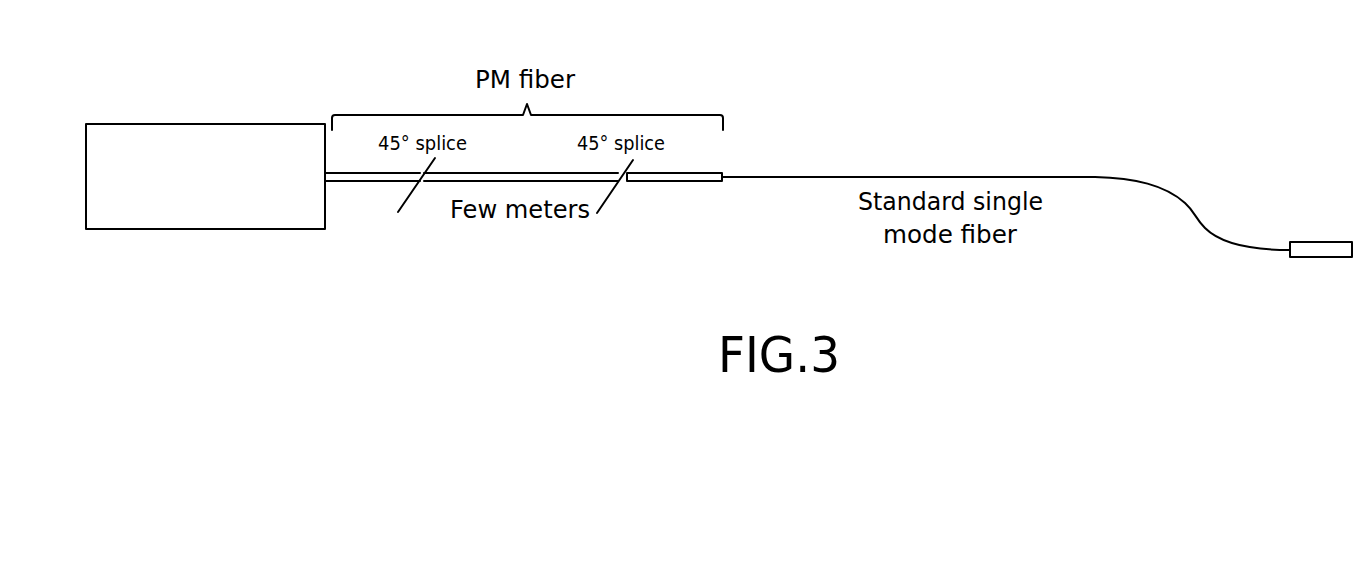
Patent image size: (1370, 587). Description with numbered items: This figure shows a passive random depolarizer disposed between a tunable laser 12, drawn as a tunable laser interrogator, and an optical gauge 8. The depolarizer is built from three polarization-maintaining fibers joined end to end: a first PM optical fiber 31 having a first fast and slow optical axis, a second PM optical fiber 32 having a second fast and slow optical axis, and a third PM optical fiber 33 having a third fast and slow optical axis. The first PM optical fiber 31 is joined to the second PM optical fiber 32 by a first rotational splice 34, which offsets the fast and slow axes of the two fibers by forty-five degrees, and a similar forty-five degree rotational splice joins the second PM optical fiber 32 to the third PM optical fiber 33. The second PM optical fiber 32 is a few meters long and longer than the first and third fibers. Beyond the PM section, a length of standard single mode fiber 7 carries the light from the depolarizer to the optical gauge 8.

The tunable laser 12 is at (206, 124).
The first PM optical fiber 31 is at (362, 176).
The second PM optical fiber 32 is at (447, 176).
The third PM optical fiber 33 is at (680, 181).
The first rotational splice 34 is at (422, 182).
The standard single mode fiber 7 is at (875, 178).
The optical gauge 8 is at (1320, 250).